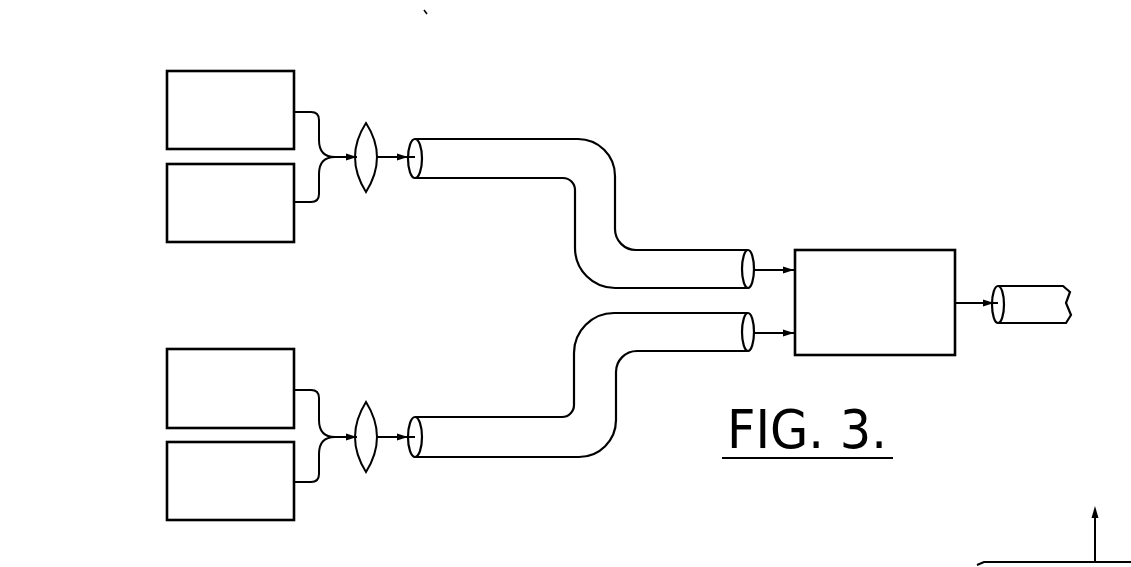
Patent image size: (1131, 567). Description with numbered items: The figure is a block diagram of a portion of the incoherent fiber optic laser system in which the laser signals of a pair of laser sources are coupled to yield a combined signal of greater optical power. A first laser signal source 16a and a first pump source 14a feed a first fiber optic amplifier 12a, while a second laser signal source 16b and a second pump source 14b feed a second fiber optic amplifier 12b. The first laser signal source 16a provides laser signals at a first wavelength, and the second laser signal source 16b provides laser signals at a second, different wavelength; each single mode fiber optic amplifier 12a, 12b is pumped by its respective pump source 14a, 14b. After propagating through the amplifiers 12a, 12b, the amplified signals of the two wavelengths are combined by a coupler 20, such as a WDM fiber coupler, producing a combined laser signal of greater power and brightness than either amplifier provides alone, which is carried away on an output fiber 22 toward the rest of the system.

The first fiber optic amplifier 12a is at (555, 139).
The second fiber optic amplifier 12b is at (555, 457).
The first pump source 14a is at (240, 242).
The second pump source 14b is at (240, 520).
The first laser signal source 16a is at (238, 71).
The second laser signal source 16b is at (238, 349).
The coupler 20 is at (873, 250).
The output optical fiber 22 is at (1033, 298).